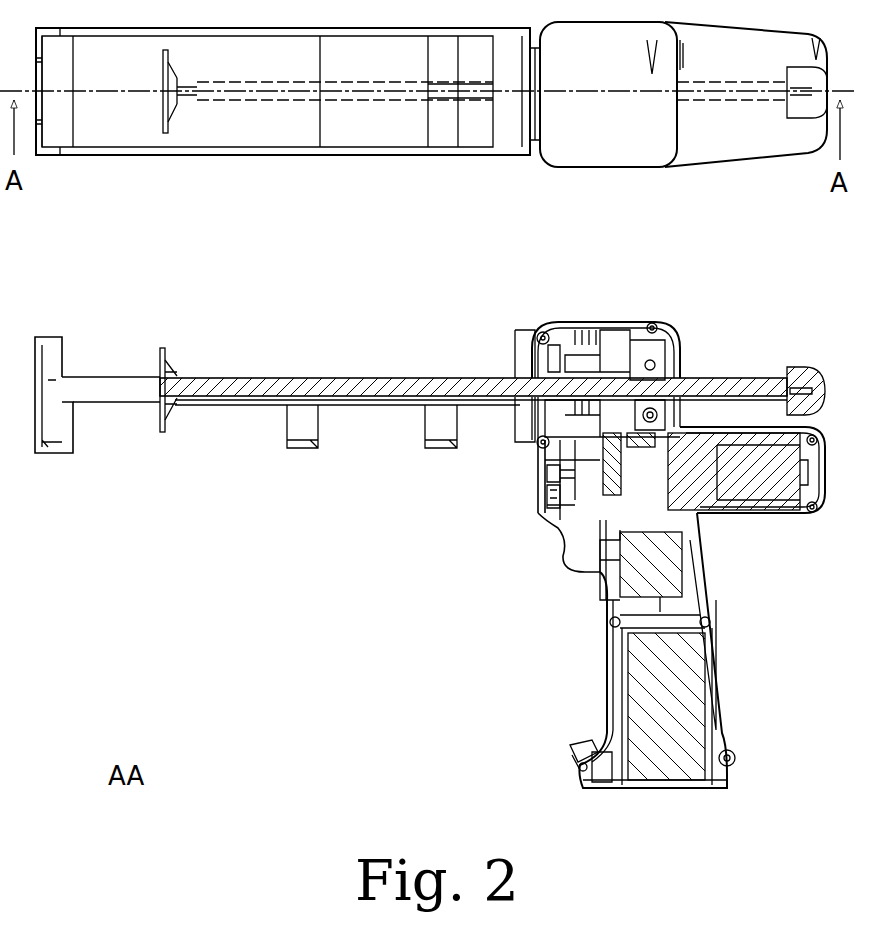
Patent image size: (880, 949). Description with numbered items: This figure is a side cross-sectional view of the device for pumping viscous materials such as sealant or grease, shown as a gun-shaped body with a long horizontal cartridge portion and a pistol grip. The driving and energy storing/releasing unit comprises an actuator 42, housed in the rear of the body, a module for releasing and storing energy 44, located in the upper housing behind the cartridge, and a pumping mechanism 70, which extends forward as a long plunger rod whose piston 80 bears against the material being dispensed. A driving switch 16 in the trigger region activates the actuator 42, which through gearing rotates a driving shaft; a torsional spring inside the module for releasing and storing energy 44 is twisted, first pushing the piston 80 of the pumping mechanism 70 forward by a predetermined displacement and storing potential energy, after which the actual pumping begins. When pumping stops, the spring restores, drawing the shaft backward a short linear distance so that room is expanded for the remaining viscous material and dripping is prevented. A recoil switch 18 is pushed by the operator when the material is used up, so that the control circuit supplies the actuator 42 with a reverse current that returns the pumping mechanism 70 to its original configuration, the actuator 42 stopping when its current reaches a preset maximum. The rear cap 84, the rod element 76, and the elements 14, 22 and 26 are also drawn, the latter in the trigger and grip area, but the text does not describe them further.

The trigger block 14 is at (535, 509).
The driving switch 16 is at (560, 545).
The recoil switch 18 is at (537, 501).
The battery latch 22 is at (562, 748).
The switch 26 is at (537, 473).
The actuator 42 is at (771, 493).
The module for releasing and storing energy 44 is at (636, 326).
The pumping mechanism 70 is at (360, 103).
The rod sleeve 76 is at (442, 85).
The piston 80 is at (171, 112).
The end cap 84 is at (42, 158).